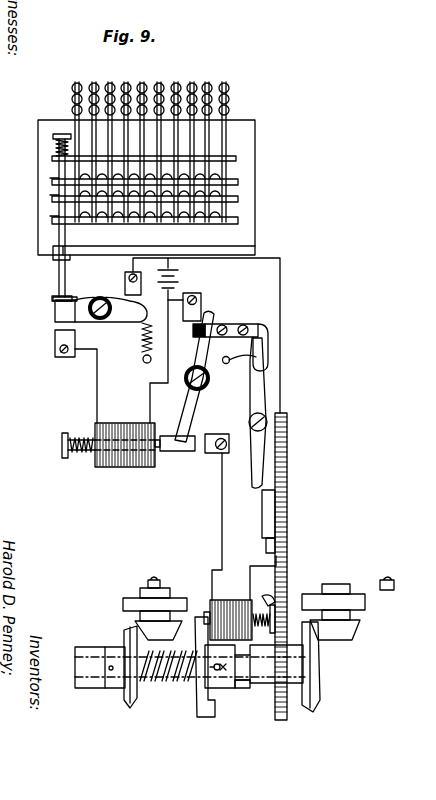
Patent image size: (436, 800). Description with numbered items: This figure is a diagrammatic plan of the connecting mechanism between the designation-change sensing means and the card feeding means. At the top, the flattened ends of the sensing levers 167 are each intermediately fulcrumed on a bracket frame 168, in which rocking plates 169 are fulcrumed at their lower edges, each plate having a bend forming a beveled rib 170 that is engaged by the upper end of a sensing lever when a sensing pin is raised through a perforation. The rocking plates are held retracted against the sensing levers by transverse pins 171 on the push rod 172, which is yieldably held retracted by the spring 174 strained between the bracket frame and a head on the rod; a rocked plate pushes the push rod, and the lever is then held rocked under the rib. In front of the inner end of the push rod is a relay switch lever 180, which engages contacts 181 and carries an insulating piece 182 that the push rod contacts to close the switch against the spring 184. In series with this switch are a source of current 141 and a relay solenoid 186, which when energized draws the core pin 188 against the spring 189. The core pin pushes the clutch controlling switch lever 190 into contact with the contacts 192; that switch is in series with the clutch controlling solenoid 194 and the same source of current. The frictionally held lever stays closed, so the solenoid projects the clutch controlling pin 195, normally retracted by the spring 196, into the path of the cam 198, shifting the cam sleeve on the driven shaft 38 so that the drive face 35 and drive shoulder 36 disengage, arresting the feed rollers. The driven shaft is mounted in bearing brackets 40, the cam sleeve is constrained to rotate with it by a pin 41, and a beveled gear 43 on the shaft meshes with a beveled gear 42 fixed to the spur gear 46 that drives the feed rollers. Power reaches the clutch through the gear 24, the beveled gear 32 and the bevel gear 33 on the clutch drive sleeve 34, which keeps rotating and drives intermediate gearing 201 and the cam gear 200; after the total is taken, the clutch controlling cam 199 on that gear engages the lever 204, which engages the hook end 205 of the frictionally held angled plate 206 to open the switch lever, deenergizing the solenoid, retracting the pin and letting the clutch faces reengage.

The sensing levers 167 is at (225, 130).
The bracket frame 168 is at (236, 158).
The beveled rib 170 is at (240, 220).
The rocking plates 169 is at (188, 208).
The spring 174 is at (57, 152).
The push rod 172 is at (57, 178).
The transverse pins 171 is at (57, 209).
The source of current 141 is at (183, 280).
The contacts 181 is at (125, 282).
The contacts 192 is at (201, 308).
The relay switch lever 180 is at (56, 318).
The insulating piece 182 is at (56, 300).
The spring 184 is at (144, 347).
The angled plate 206 is at (269, 330).
The hook end 205 is at (268, 366).
The lever 204 is at (257, 470).
The relay solenoid 186 is at (128, 468).
The core pin 188 is at (86, 455).
The spring 189 is at (73, 438).
The clutch controlling switch lever 190 is at (183, 452).
The cam gear 200 is at (287, 498).
The clutch controlling cam 199 is at (264, 548).
The intermediate gearing 201 is at (272, 603).
The clutch controlling solenoid 194 is at (228, 611).
The clutch controlling pin 195 is at (206, 618).
The spring 196 is at (262, 612).
The bearing brackets 40 is at (90, 648).
The beveled gear 43 is at (130, 702).
The beveled gear 42 is at (148, 633).
The spur gear 46 is at (130, 598).
The cam 198 is at (203, 718).
The driven shaft 38 is at (190, 690).
The pin 41 is at (238, 682).
The drive face 35 is at (242, 690).
The drive shoulder 36 is at (268, 686).
The clutch drive sleeve 34 is at (288, 708).
The gear 24 is at (366, 599).
The beveled gear 32 is at (345, 632).
The bevel gear 33 is at (318, 688).